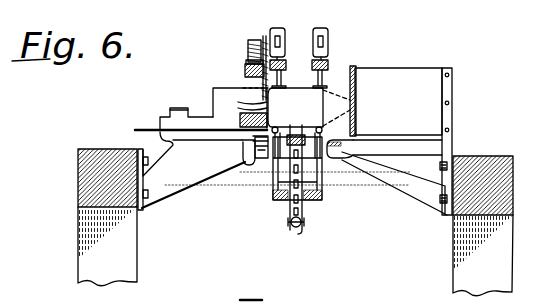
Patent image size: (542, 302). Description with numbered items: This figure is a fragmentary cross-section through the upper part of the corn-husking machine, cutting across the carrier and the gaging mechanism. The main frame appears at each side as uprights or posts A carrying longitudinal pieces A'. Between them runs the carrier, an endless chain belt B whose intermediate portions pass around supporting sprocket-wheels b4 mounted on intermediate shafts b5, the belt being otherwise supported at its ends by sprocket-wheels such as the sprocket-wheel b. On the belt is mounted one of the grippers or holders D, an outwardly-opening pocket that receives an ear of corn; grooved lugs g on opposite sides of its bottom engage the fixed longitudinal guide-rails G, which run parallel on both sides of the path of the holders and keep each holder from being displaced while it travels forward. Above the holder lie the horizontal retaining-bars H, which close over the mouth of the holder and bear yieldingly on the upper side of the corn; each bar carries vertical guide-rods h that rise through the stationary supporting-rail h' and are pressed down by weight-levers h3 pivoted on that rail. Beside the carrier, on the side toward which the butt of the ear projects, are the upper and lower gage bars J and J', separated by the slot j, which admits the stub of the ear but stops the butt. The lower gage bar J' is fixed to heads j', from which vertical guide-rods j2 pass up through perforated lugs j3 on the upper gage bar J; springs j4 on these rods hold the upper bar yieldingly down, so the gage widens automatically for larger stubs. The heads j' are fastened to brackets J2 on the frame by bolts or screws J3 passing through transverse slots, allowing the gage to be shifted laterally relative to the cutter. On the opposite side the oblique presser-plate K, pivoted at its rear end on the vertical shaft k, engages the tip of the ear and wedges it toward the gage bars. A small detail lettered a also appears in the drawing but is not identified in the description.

The uprights or posts A is at (276, 251).
The longitudinal pieces A' is at (277, 182).
The upper gage bar J is at (256, 58).
The lower gage bar J' is at (210, 94).
The brackets J2 is at (201, 170).
The bolts or screws J3 is at (162, 107).
The slot j is at (244, 100).
The heads j' is at (167, 112).
The guide-rods j2 is at (245, 72).
The lugs j3 is at (246, 62).
The springs j4 is at (250, 46).
The guide-rods h is at (328, 80).
The supporting-rail h' is at (335, 57).
The weight-levers h3 is at (313, 43).
The retaining-bars H is at (316, 87).
The holder D is at (296, 110).
The presser-plate K is at (388, 102).
The vertical shaft k is at (454, 148).
The guide-rails G is at (361, 147).
The jaw a is at (246, 158).
The grooved lugs g is at (259, 160).
The sprocket-wheel b is at (296, 179).
The supporting sprocket-wheels b4 is at (287, 220).
The intermediate shafts b5 is at (393, 186).
The chain belt B is at (301, 228).